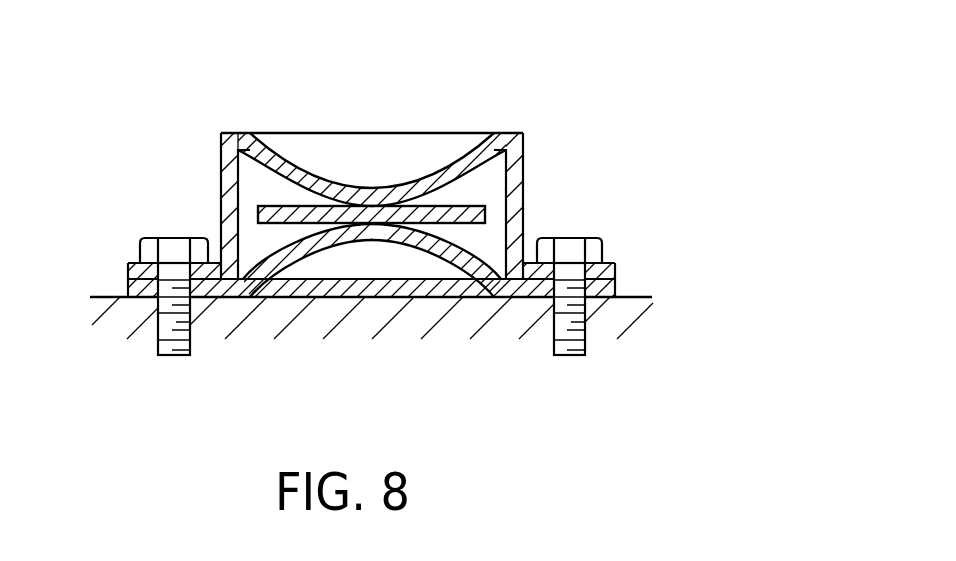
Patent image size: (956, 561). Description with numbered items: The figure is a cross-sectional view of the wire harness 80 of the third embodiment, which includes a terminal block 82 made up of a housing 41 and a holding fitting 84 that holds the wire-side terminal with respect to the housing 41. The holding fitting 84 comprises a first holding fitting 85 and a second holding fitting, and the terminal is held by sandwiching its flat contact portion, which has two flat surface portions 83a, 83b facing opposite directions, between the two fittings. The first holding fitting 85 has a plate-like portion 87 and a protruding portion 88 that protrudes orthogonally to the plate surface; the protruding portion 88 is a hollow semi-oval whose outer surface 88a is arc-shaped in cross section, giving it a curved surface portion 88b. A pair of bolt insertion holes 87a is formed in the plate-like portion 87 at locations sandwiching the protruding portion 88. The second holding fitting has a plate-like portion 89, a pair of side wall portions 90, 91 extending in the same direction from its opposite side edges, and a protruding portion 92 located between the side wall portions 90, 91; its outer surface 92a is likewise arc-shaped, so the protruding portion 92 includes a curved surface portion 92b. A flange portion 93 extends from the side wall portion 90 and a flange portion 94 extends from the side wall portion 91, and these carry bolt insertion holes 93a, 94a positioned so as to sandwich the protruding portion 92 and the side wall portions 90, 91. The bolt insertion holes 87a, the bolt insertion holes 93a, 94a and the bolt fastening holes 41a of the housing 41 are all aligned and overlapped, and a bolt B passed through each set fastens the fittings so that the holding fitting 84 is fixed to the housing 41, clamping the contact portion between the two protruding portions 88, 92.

The wire harness 80 is at (637, 78).
The terminal block 82 is at (633, 295).
The flat surface portion 83a is at (313, 232).
The flat surface portion 83b is at (243, 147).
The holding fitting 84 is at (367, 323).
The first holding fitting 85 is at (367, 323).
The plate-like portion 87 is at (399, 323).
The bolt insertion holes 87a is at (152, 308).
The protruding portion 88 is at (385, 228).
The outer surface 88a is at (277, 248).
The curved surface portion 88b is at (447, 237).
The plate-like portion 89 is at (498, 132).
The side wall portion 90 is at (368, 174).
The side wall portion 91 is at (523, 163).
The protruding portion 92 is at (371, 141).
The outer surface 92a is at (300, 192).
The curved surface portion 92b is at (450, 190).
The flange portion 93 is at (140, 262).
The bolt insertion hole 93a is at (172, 268).
The flange portion 94 is at (603, 262).
The bolt insertion hole 94a is at (578, 268).
The housing 41 is at (622, 335).
The bolt fastening holes 41a is at (190, 337).
The bolt B is at (374, 299).